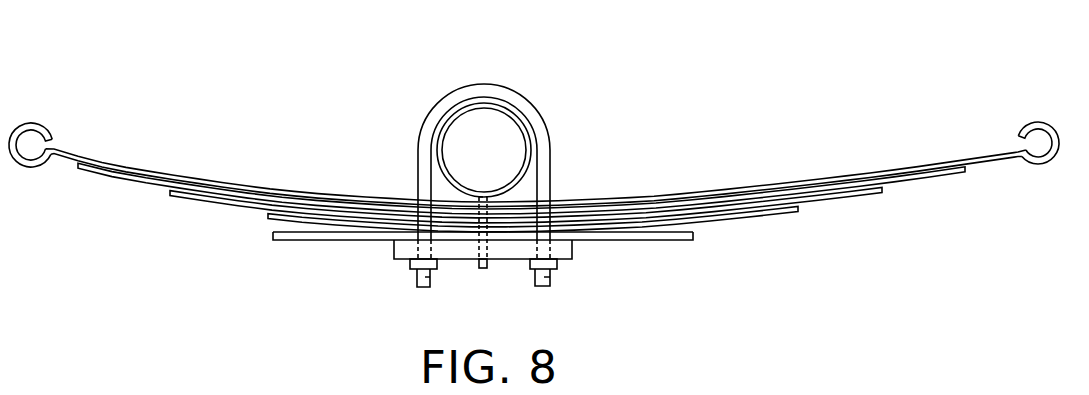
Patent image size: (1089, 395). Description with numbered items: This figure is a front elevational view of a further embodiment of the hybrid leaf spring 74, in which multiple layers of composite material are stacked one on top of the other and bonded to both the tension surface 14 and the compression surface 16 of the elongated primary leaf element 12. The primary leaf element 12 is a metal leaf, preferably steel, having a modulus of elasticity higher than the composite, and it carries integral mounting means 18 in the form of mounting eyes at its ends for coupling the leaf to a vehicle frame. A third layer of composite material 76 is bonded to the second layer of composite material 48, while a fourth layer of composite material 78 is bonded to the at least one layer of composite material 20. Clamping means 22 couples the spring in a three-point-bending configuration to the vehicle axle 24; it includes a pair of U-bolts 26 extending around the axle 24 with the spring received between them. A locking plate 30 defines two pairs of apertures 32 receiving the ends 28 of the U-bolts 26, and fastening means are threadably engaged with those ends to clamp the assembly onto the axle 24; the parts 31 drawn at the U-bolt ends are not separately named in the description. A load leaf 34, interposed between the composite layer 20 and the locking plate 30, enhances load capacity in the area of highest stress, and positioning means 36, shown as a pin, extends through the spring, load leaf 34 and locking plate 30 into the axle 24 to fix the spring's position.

The elongated primary leaf element 12 is at (113, 161).
The tension surface 14 is at (840, 173).
The compression surface 16 is at (838, 196).
The mounting means 18 is at (41, 124).
The layer of composite material 20 is at (305, 237).
The clamping means 22 is at (425, 94).
The axle 24 is at (494, 97).
The U-bolts 26 is at (418, 156).
The ends of the U-bolts 28 is at (420, 287).
The locking plate 30 is at (508, 259).
The nut 31 is at (410, 265).
The apertures 32 is at (418, 255).
The load leaf 34 is at (331, 241).
The positioning means 36 is at (482, 270).
The second layer of composite material 48 is at (641, 200).
The hybrid leaf spring 74 is at (748, 140).
The third layer of composite material 76 is at (603, 199).
The fourth layer of composite material 78 is at (284, 212).